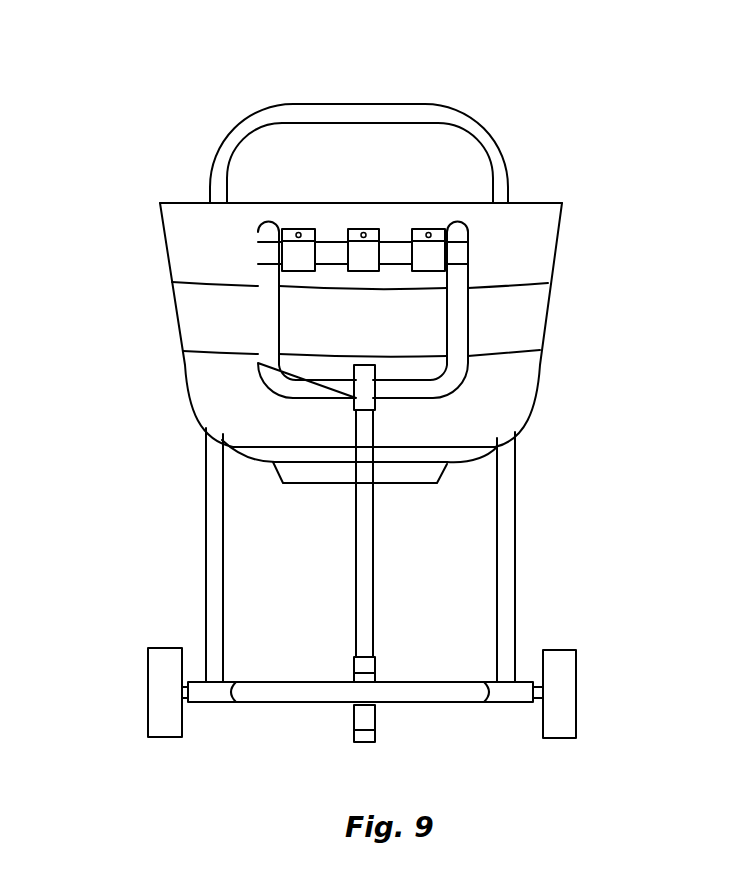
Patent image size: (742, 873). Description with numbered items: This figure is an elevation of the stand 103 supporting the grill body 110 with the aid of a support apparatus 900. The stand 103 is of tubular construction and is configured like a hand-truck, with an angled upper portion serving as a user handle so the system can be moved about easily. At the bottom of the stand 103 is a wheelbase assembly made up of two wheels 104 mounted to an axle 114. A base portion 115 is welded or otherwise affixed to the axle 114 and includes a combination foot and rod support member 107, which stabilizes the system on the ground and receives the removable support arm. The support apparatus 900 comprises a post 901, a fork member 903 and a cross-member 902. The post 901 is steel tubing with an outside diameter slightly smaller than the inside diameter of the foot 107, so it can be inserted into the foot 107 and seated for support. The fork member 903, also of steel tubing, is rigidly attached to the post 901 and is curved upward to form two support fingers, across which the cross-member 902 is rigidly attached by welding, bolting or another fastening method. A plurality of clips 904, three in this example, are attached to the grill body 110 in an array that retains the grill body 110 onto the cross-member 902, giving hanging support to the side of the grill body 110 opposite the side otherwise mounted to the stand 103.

The stand 103 is at (298, 104).
The grill body 110 is at (591, 374).
The support apparatus 900 is at (435, 427).
The post 901 is at (354, 583).
The cross-member 902 is at (398, 248).
The fork member 903 is at (264, 381).
The clips 904 is at (430, 272).
The wheels 104 is at (577, 670).
The axle 114 is at (200, 703).
The base portion 115 is at (393, 682).
The foot 107 is at (378, 716).